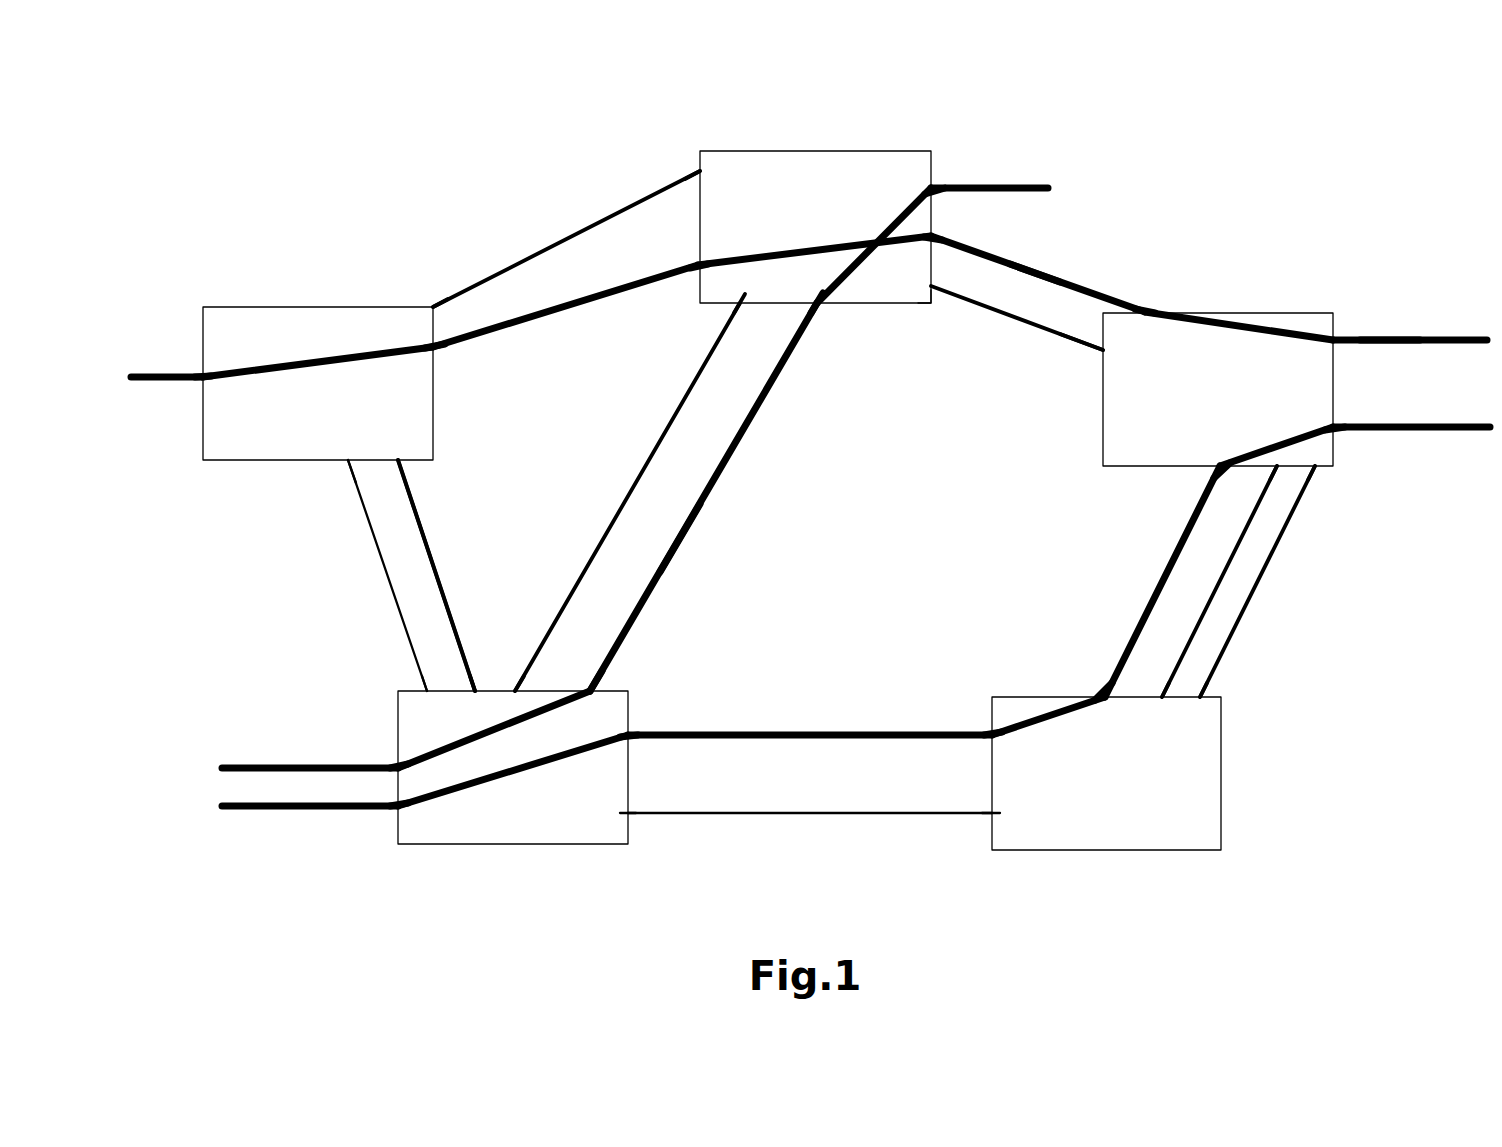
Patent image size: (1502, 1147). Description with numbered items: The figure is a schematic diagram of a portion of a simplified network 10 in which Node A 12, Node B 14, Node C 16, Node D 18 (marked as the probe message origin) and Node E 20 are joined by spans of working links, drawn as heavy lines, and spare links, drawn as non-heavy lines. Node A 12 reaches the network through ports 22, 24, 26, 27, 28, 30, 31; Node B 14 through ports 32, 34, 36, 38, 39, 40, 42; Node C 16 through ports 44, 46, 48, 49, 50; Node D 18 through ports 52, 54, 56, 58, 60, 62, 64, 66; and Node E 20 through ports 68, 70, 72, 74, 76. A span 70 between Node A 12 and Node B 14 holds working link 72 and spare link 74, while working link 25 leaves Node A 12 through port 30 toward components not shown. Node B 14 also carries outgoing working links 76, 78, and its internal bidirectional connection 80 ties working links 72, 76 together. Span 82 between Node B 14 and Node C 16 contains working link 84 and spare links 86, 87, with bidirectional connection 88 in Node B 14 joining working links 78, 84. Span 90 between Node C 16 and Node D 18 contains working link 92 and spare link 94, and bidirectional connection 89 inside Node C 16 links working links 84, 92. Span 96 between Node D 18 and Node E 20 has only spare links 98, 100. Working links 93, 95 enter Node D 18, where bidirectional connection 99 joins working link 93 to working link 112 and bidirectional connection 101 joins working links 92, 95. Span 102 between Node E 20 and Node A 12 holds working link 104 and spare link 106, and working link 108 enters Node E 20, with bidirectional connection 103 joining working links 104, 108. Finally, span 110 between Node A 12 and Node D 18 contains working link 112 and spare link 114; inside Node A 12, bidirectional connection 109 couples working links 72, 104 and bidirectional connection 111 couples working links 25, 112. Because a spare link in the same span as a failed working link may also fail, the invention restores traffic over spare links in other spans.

The network 10 is at (1153, 190).
The Node A 12 is at (817, 151).
The Node B 14 is at (1307, 312).
The Node C 16 is at (1222, 772).
The Node D 18 is at (398, 842).
The Node E 20 is at (268, 463).
The port 22 is at (698, 283).
The port 24 is at (740, 307).
The working link 25 is at (1020, 183).
The port 26 is at (817, 307).
The port 27 is at (932, 303).
The port 28 is at (933, 240).
The port 30 is at (932, 187).
The port 31 is at (700, 170).
The port 32 is at (1145, 310).
The port 34 is at (1103, 348).
The port 36 is at (1217, 467).
The port 38 is at (1315, 467).
The port 39 is at (1277, 468).
The port 40 is at (1333, 423).
The port 42 is at (1335, 343).
The port 44 is at (993, 732).
The port 46 is at (992, 813).
The port 48 is at (1207, 690).
The port 49 is at (1162, 693).
The port 50 is at (1103, 690).
The port 52 is at (398, 767).
The port 54 is at (398, 809).
The port 56 is at (628, 815).
The port 58 is at (627, 732).
The port 60 is at (601, 673).
The port 62 is at (531, 681).
The port 64 is at (475, 690).
The port 66 is at (422, 690).
The port 68 is at (202, 372).
The span 70 is at (1030, 246).
The working link 72 is at (1067, 282).
The spare link 74 is at (1023, 323).
The working link 76 is at (1372, 335).
The working link 78 is at (1428, 430).
The bidirectional connection 80 is at (1222, 320).
The span 82 is at (1330, 606).
The working link 84 is at (1150, 597).
The spare link 86 is at (1278, 538).
The spare link 87 is at (1203, 615).
The bidirectional connection 88 is at (1317, 437).
The bidirectional connection 89 is at (1057, 708).
The span 90 is at (768, 834).
The working link 92 is at (752, 732).
The working link 93 is at (290, 765).
The spare link 94 is at (773, 812).
The working link 95 is at (249, 811).
The span 96 is at (306, 568).
The spare link 98 is at (445, 604).
The bidirectional connection 99 is at (482, 732).
The spare link 100 is at (405, 637).
The bidirectional connection 101 is at (585, 754).
The span 102 is at (486, 221).
The bidirectional connection 103 is at (300, 358).
The working link 104 is at (502, 330).
The spare link 106 is at (595, 217).
The working link 108 is at (163, 382).
The bidirectional connection 109 is at (763, 253).
The span 110 is at (764, 441).
The bidirectional connection 111 is at (915, 212).
The working link 112 is at (702, 518).
The spare link 114 is at (627, 498).